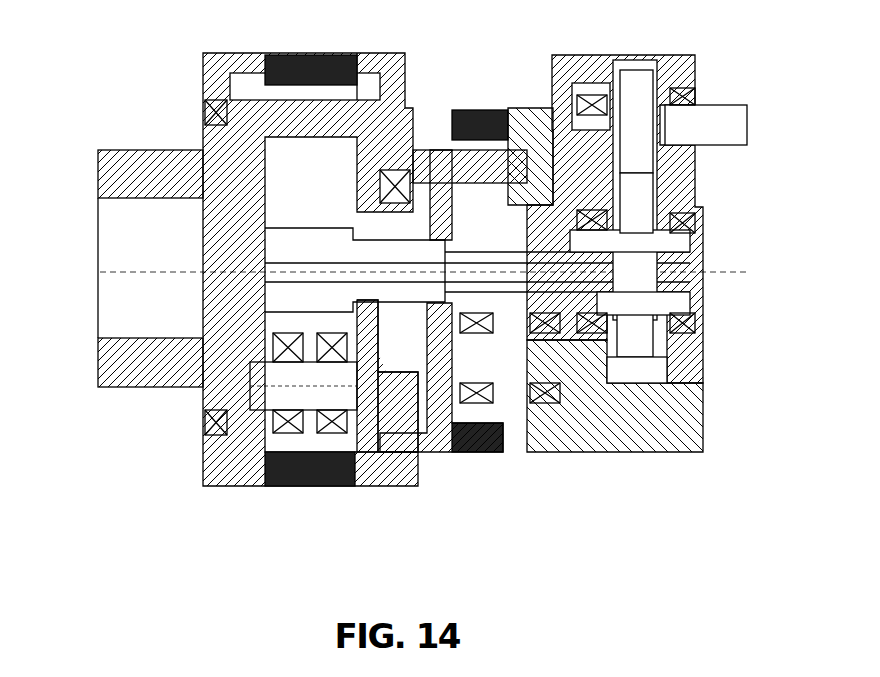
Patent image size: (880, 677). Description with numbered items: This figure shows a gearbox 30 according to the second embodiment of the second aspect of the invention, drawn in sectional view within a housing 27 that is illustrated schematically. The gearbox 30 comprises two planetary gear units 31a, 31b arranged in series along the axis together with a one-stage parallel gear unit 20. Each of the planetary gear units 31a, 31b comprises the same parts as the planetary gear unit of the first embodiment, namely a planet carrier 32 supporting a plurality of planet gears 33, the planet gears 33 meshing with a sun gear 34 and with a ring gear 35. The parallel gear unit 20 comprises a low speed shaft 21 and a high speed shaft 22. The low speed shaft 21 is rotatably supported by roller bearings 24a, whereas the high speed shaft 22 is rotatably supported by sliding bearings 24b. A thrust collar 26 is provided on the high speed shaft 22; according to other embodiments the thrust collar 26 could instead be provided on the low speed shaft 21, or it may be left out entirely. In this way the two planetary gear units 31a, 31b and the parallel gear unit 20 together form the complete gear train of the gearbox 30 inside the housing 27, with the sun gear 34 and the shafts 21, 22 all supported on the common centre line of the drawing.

The gearbox 30 is at (135, 65).
The planet carrier 32 is at (148, 172).
The planetary gear unit 31a is at (306, 490).
The planetary gear unit 31b is at (478, 460).
The ring gear 35 is at (262, 477).
The planet gears 33 is at (228, 445).
The sun gear 34 is at (300, 300).
The parallel gear unit 20 is at (630, 460).
The housing 27 is at (683, 387).
The low speed shaft 21 is at (690, 246).
The high speed shaft 22 is at (700, 112).
The roller bearings 24a is at (680, 322).
The sliding bearings 24b is at (585, 100).
The thrust collar 26 is at (685, 62).